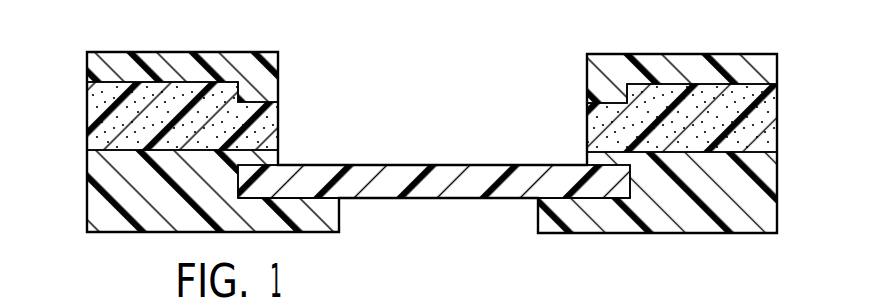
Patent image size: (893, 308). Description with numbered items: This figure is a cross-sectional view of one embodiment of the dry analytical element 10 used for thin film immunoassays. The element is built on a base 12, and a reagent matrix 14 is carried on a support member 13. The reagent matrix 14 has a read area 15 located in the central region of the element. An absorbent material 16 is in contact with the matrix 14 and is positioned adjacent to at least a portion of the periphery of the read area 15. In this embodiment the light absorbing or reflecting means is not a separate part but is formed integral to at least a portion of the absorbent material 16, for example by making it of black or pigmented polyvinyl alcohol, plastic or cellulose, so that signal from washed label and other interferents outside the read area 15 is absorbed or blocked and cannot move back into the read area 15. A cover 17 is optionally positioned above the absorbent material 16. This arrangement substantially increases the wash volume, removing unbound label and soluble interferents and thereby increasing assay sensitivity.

The dry analytical element 10 is at (69, 46).
The base 12 is at (758, 217).
The support member 13 is at (382, 200).
The reagent matrix 14 is at (320, 173).
The read area 15 is at (440, 136).
The absorbent material 16 is at (772, 122).
The cover 17 is at (678, 63).